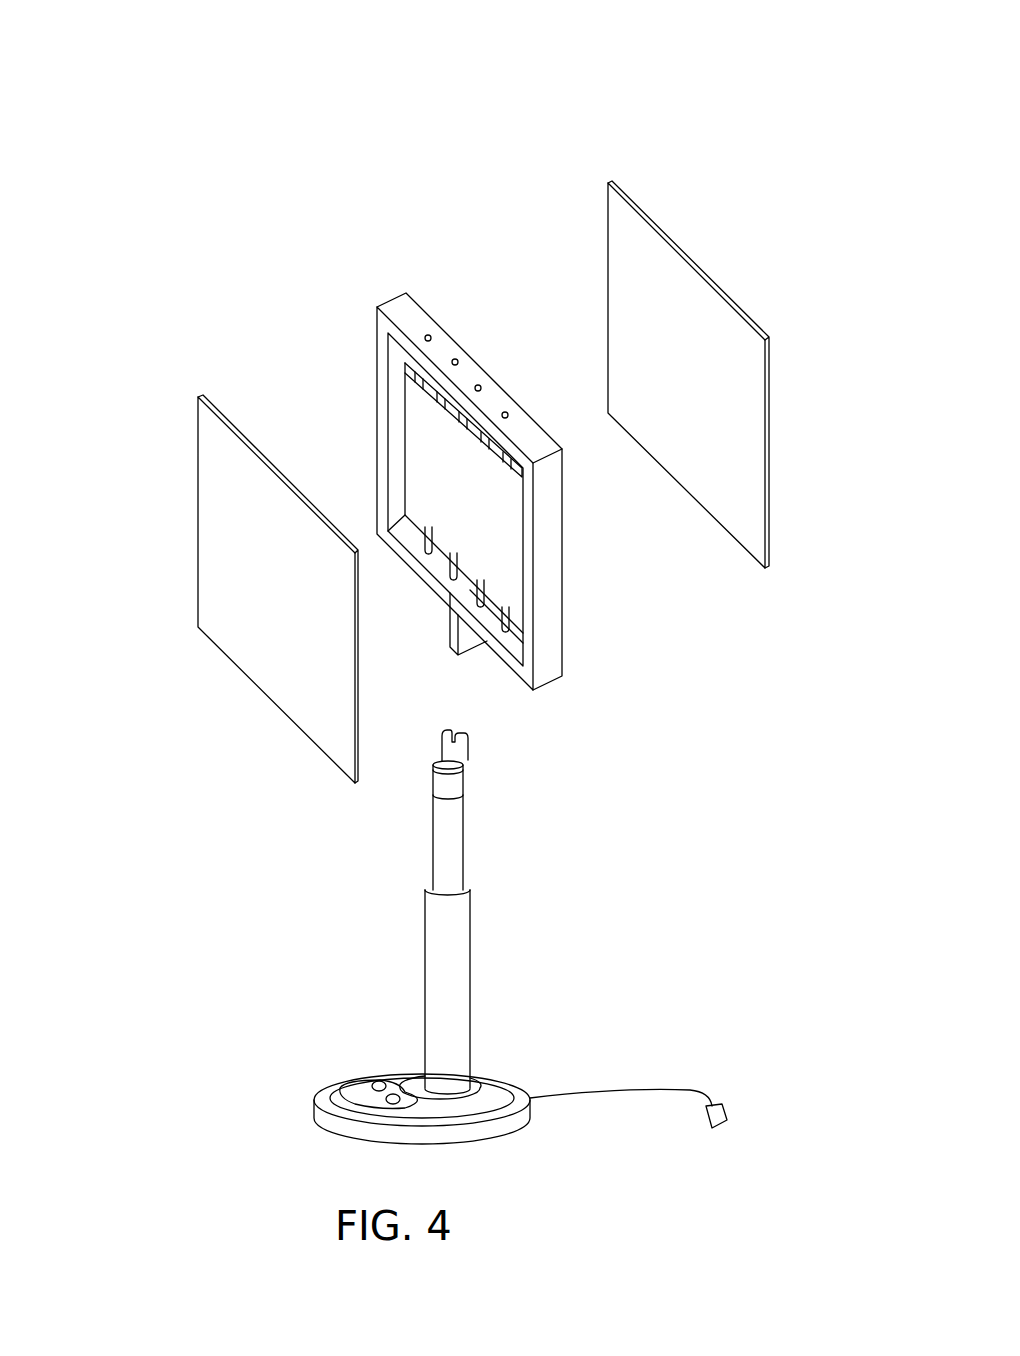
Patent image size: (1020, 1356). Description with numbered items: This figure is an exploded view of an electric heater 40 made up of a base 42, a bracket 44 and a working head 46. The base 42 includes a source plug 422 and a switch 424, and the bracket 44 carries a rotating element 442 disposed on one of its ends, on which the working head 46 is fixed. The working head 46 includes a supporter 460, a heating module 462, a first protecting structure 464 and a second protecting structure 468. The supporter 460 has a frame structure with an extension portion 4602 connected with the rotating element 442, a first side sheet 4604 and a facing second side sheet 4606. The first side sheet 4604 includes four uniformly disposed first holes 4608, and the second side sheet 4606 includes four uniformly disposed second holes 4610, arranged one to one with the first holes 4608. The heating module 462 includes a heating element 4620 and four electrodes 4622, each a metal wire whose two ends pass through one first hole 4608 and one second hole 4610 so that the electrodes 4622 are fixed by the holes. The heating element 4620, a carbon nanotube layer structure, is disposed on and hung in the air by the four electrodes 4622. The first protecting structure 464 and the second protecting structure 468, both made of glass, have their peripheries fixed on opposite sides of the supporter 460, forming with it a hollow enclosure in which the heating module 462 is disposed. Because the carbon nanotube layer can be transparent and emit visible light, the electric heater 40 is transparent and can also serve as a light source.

The electric heater 40 is at (445, 63).
The base 42 is at (325, 1092).
The bracket 44 is at (457, 940).
The working head 46 is at (576, 158).
The source plug 422 is at (718, 1130).
The switch 424 is at (379, 1082).
The rotating element 442 is at (458, 750).
The supporter 460 is at (430, 302).
The heating module 462 is at (343, 282).
The first protecting structure 464 is at (205, 396).
The second protecting structure 468 is at (618, 213).
The extension portion 4602 is at (466, 643).
The first side sheet 4604 is at (532, 443).
The second side sheet 4606 is at (437, 567).
The first holes 4608 is at (458, 360).
The second holes 4610 is at (507, 633).
The heating element 4620 is at (428, 428).
The electrodes 4622 is at (435, 520).